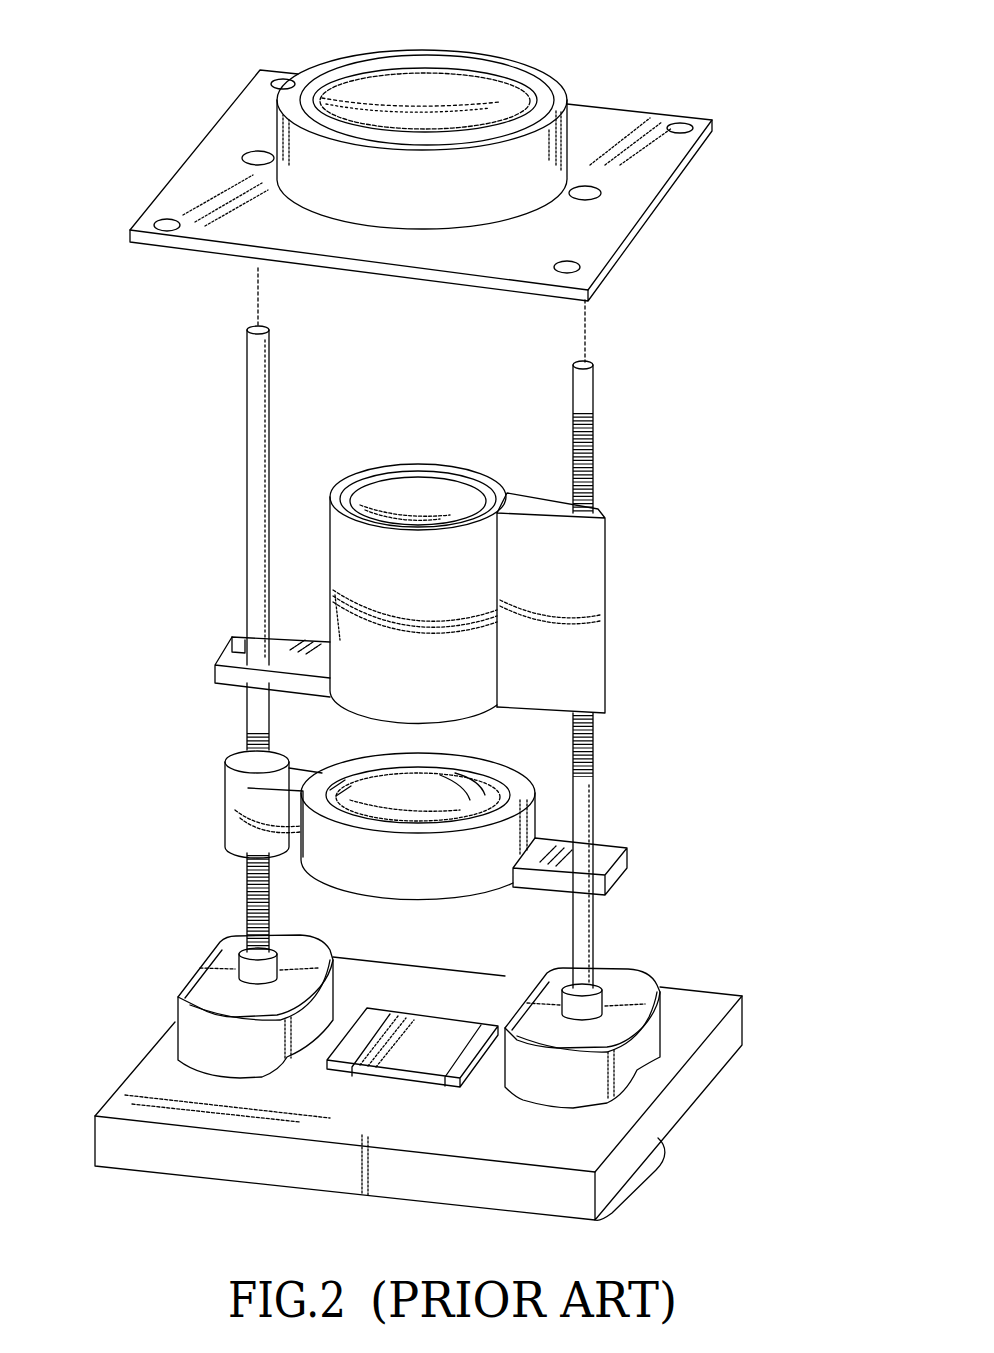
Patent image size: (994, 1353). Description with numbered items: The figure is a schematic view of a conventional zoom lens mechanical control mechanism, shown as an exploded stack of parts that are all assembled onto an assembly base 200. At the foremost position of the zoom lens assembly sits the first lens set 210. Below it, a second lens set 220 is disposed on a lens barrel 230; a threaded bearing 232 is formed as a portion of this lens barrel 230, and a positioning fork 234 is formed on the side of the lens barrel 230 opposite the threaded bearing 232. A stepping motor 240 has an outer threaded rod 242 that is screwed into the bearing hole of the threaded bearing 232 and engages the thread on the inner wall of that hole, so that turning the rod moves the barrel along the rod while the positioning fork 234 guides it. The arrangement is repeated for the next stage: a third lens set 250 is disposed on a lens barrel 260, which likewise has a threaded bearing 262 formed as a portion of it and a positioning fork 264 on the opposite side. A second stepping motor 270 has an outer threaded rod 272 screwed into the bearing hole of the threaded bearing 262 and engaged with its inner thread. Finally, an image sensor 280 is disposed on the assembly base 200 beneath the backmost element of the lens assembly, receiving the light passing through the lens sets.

The assembly base 200 is at (210, 1162).
The first lens set 210 is at (475, 100).
The second lens set 220 is at (395, 497).
The lens barrel 230 is at (510, 563).
The threaded bearing 232 is at (585, 598).
The positioning fork 234 is at (218, 677).
The stepping motor 240 is at (690, 1032).
The outer threaded rod 242 is at (593, 450).
The third lens set 250 is at (510, 773).
The lens barrel 260 is at (492, 849).
The threaded bearing 262 is at (230, 805).
The positioning fork 264 is at (625, 858).
The stepping motor 270 is at (207, 1035).
The outer threaded rod 272 is at (245, 897).
The image sensor 280 is at (415, 1025).